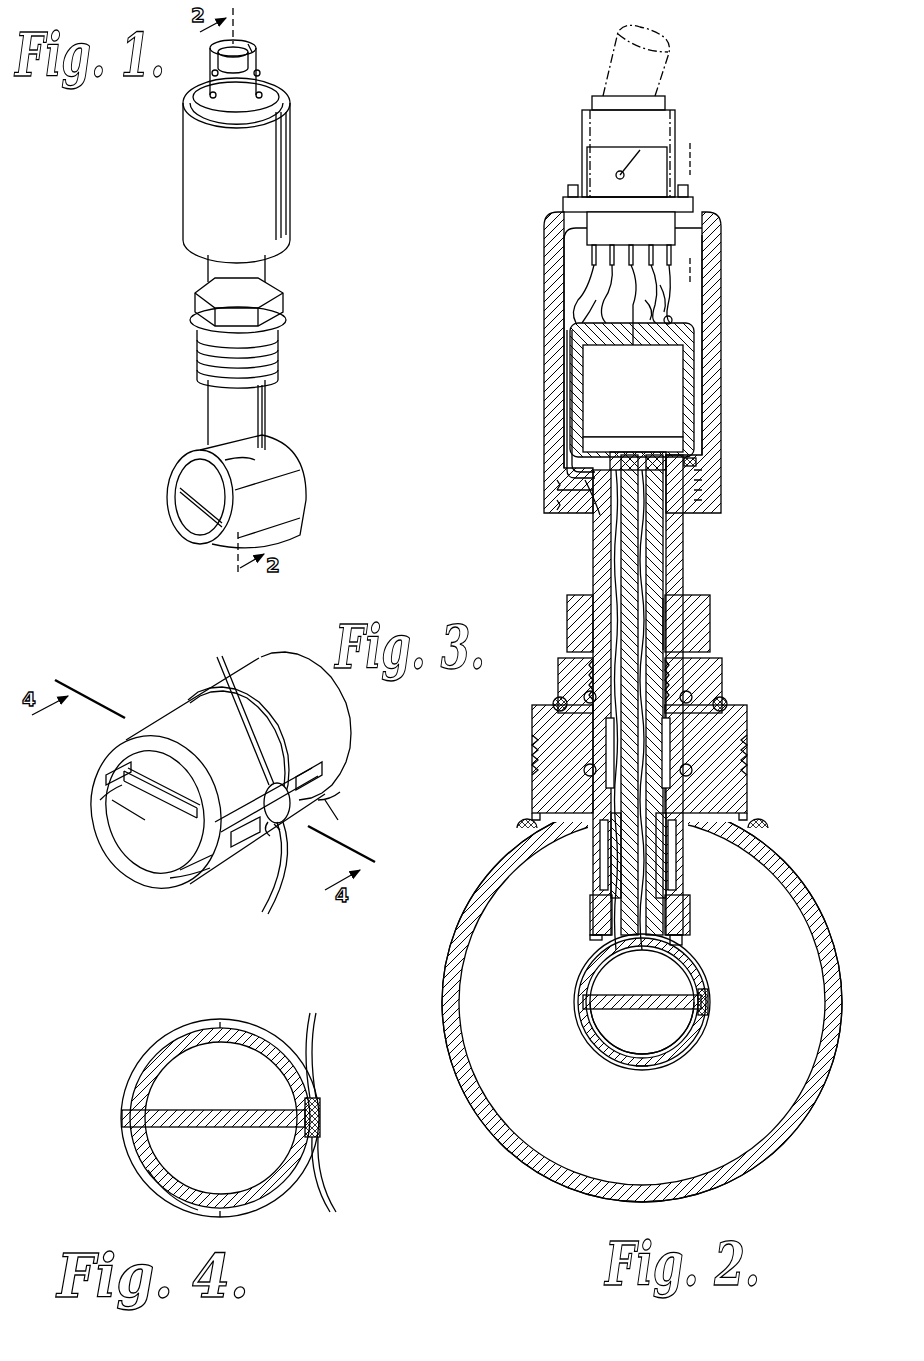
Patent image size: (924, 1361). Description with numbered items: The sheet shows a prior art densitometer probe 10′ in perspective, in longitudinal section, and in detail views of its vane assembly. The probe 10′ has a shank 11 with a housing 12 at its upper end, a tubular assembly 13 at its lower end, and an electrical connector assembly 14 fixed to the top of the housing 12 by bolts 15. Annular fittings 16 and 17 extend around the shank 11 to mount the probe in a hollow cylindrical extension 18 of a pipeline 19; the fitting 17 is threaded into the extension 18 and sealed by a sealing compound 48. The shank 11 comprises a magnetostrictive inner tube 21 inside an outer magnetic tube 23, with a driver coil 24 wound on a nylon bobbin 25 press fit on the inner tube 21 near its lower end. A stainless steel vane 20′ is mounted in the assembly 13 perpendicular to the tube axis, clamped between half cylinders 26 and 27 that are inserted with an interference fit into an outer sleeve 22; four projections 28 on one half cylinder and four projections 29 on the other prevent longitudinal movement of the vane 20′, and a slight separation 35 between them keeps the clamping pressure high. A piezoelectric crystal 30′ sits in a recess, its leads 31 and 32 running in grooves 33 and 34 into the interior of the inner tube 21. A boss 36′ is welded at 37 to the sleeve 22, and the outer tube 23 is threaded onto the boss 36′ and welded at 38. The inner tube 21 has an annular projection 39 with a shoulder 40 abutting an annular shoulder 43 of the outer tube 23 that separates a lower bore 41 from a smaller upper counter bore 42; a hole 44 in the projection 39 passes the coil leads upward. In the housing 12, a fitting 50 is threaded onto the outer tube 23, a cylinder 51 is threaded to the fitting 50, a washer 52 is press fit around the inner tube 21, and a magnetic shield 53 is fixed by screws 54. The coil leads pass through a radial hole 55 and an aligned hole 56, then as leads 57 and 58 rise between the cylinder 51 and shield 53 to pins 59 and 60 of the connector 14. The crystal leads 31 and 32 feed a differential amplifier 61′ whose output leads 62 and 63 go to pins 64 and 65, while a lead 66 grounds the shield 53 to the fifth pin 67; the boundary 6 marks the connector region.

In FIG. 2, the section boundary 6 is at (694, 156).
In FIG. 1, the prior art probe 10′ is at (150, 266).
In FIG. 1, the shank 11 is at (270, 406).
In FIG. 2, the shank 11 is at (651, 705).
In FIG. 1, the housing 12 is at (293, 196).
In FIG. 2, the housing 12 is at (726, 374).
In FIG. 1, the tubular assembly 13 is at (294, 449).
In FIG. 2, the tubular assembly 13 is at (712, 986).
In FIG. 1, the electrical connector assembly 14 is at (238, 84).
In FIG. 2, the electrical connector assembly 14 is at (582, 152).
In FIG. 1, the bolts 15 is at (259, 76).
In FIG. 1, the annular fitting 16 is at (203, 299).
In FIG. 2, the annular fitting 16 is at (712, 598).
In FIG. 1, the annular fitting 17 is at (205, 344).
In FIG. 2, the annular fitting 17 is at (730, 664).
In FIG. 2, the hollow cylindrical extension 18 is at (750, 753).
In FIG. 2, the pipeline 19 is at (812, 882).
In FIG. 1, the stainless steel vane 20′ is at (196, 490).
In FIG. 3, the stainless steel vane 20′ is at (155, 785).
In FIG. 4, the stainless steel vane 20′ is at (195, 1110).
In FIG. 2, the stainless steel vane 20′ is at (640, 995).
In FIG. 2, the magnetostrictive inner tube 21 is at (666, 556).
In FIG. 2, the outer sleeve 22 is at (695, 1046).
In FIG. 2, the outer magnetic tube 23 is at (590, 562).
In FIG. 2, the driver coil 24 is at (668, 863).
In FIG. 2, the nylon bobbin 25 is at (674, 896).
In FIG. 3, the half cylinder 26 is at (262, 660).
In FIG. 4, the half cylinder 26 is at (130, 1088).
In FIG. 2, the half cylinder 26 is at (586, 989).
In FIG. 3, the half cylinder 27 is at (312, 790).
In FIG. 4, the half cylinder 27 is at (250, 1212).
In FIG. 2, the half cylinder 27 is at (645, 1068).
In FIG. 3, the projections 28 is at (108, 778).
In FIG. 3, the projections 29 is at (120, 805).
In FIG. 3, the piezoelectric crystal 30′ is at (266, 806).
In FIG. 4, the piezoelectric crystal 30′ is at (320, 1122).
In FIG. 2, the piezoelectric crystal 30′ is at (708, 1003).
In FIG. 3, the electrical lead 31 is at (218, 662).
In FIG. 4, the electrical lead 31 is at (312, 1035).
In FIG. 3, the electrical lead 32 is at (262, 902).
In FIG. 4, the electrical lead 32 is at (328, 1190).
In FIG. 3, the groove 33 is at (278, 740).
In FIG. 4, the groove 33 is at (214, 1028).
In FIG. 3, the groove 34 is at (280, 828).
In FIG. 4, the groove 34 is at (170, 1200).
In FIG. 3, the separation 35 is at (110, 790).
In FIG. 2, the boss 36′ is at (688, 946).
In FIG. 2, the weld 37 is at (597, 941).
In FIG. 2, the weld 38 is at (589, 919).
In FIG. 2, the annular projection 39 is at (692, 736).
In FIG. 2, the shoulder 40 is at (693, 697).
In FIG. 2, the lower bore 41 is at (694, 773).
In FIG. 2, the upper counter bore 42 is at (663, 633).
In FIG. 2, the annular shoulder 43 is at (602, 739).
In FIG. 2, the hole 44 is at (588, 772).
In FIG. 2, the sealing compound 48 is at (557, 698).
In FIG. 2, the fitting 50 is at (722, 499).
In FIG. 2, the cylinder 51 is at (722, 432).
In FIG. 2, the washer 52 is at (670, 440).
In FIG. 2, the shield 53 is at (698, 334).
In FIG. 2, the screws 54 is at (697, 462).
In FIG. 2, the radial hole 55 is at (586, 484).
In FIG. 2, the hole 56 is at (580, 466).
In FIG. 2, the coil lead 57 is at (590, 285).
In FIG. 2, the coil lead 58 is at (578, 318).
In FIG. 2, the pin 59 is at (580, 260).
In FIG. 2, the pin 60 is at (628, 284).
In FIG. 2, the differential amplifier 61′ is at (584, 382).
In FIG. 2, the output lead 62 is at (662, 292).
In FIG. 2, the output lead 63 is at (660, 302).
In FIG. 2, the pin 64 is at (631, 238).
In FIG. 2, the pin 65 is at (672, 256).
In FIG. 2, the lead 66 is at (672, 319).
In FIG. 2, the fifth pin 67 is at (672, 263).